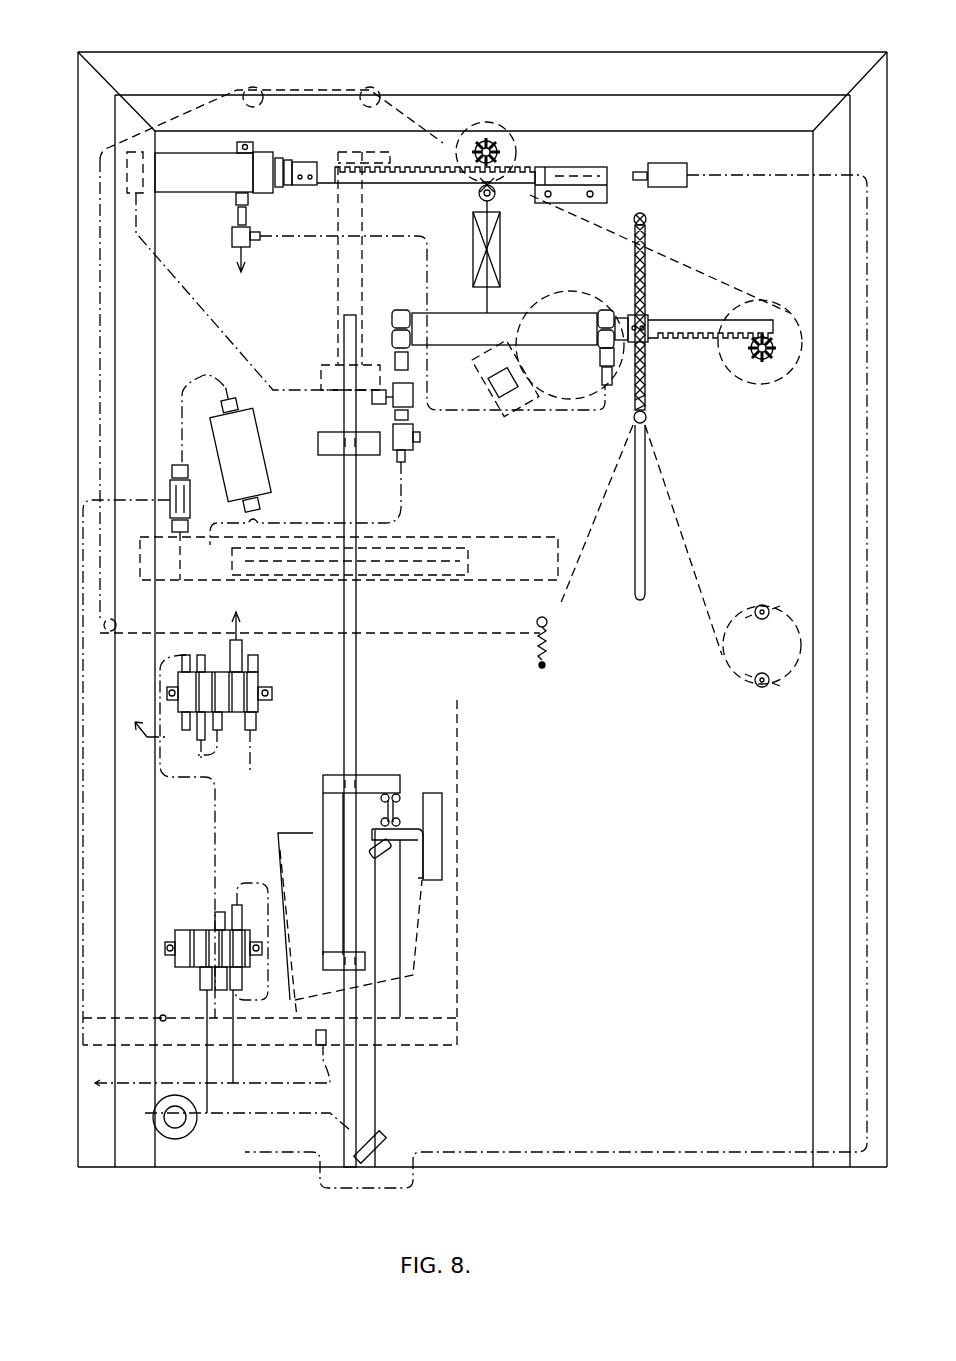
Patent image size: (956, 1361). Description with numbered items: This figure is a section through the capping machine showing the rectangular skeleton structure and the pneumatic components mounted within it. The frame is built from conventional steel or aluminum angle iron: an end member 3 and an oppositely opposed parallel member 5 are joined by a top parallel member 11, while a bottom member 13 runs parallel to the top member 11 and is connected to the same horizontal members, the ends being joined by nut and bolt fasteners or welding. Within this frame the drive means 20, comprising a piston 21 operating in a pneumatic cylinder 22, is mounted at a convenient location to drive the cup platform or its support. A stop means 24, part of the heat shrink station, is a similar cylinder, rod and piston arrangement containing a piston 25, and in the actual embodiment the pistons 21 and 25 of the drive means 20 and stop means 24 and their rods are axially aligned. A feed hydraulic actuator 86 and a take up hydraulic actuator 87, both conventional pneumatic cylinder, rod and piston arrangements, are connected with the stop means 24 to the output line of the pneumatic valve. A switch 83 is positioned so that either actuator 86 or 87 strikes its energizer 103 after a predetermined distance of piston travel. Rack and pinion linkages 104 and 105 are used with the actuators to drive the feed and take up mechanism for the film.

The end member 3 is at (85, 235).
The parallel member 5 is at (868, 162).
The top parallel member 11 is at (545, 65).
The bottom member 13 is at (580, 1168).
The drive means 20 is at (365, 742).
The piston 21 is at (357, 650).
The pneumatic cylinder 22 is at (325, 855).
The stop means 24 is at (328, 266).
The piston 25 is at (365, 212).
The switch 83 is at (672, 167).
The feed hydraulic actuator 86 is at (187, 150).
The take up hydraulic actuator 87 is at (465, 325).
The energizer 103 is at (640, 172).
The rack and pinion linkage 104 is at (410, 165).
The rack and pinion linkage 105 is at (622, 427).